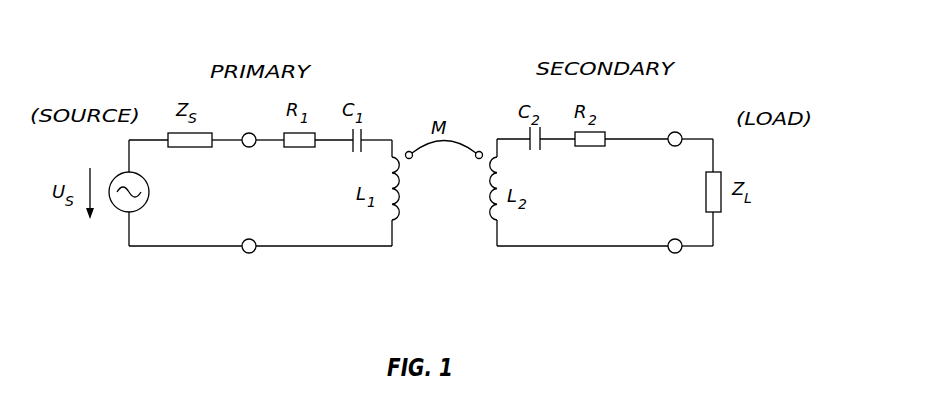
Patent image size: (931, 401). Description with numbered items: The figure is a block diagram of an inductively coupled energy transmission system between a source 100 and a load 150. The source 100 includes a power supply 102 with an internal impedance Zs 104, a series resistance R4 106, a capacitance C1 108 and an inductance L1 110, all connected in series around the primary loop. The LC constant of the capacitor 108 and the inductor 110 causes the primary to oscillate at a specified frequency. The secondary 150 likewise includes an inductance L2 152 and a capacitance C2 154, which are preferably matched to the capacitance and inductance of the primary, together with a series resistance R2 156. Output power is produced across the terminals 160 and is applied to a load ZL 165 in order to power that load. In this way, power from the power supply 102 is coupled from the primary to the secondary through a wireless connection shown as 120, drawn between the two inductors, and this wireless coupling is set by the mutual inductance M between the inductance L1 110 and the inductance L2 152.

The source 100 is at (106, 54).
The power supply 102 is at (150, 192).
The internal impedance Zs 104 is at (190, 148).
The series resistance R4 106 is at (300, 148).
The capacitance C1 108 is at (356, 153).
The inductance L1 110 is at (392, 214).
The wireless connection 120 is at (444, 143).
The load 150 is at (718, 74).
The inductance L2 152 is at (493, 212).
The capacitance C2 154 is at (535, 152).
The series resistance R2 156 is at (592, 148).
The terminals 160 is at (673, 155).
The load ZL 165 is at (722, 205).